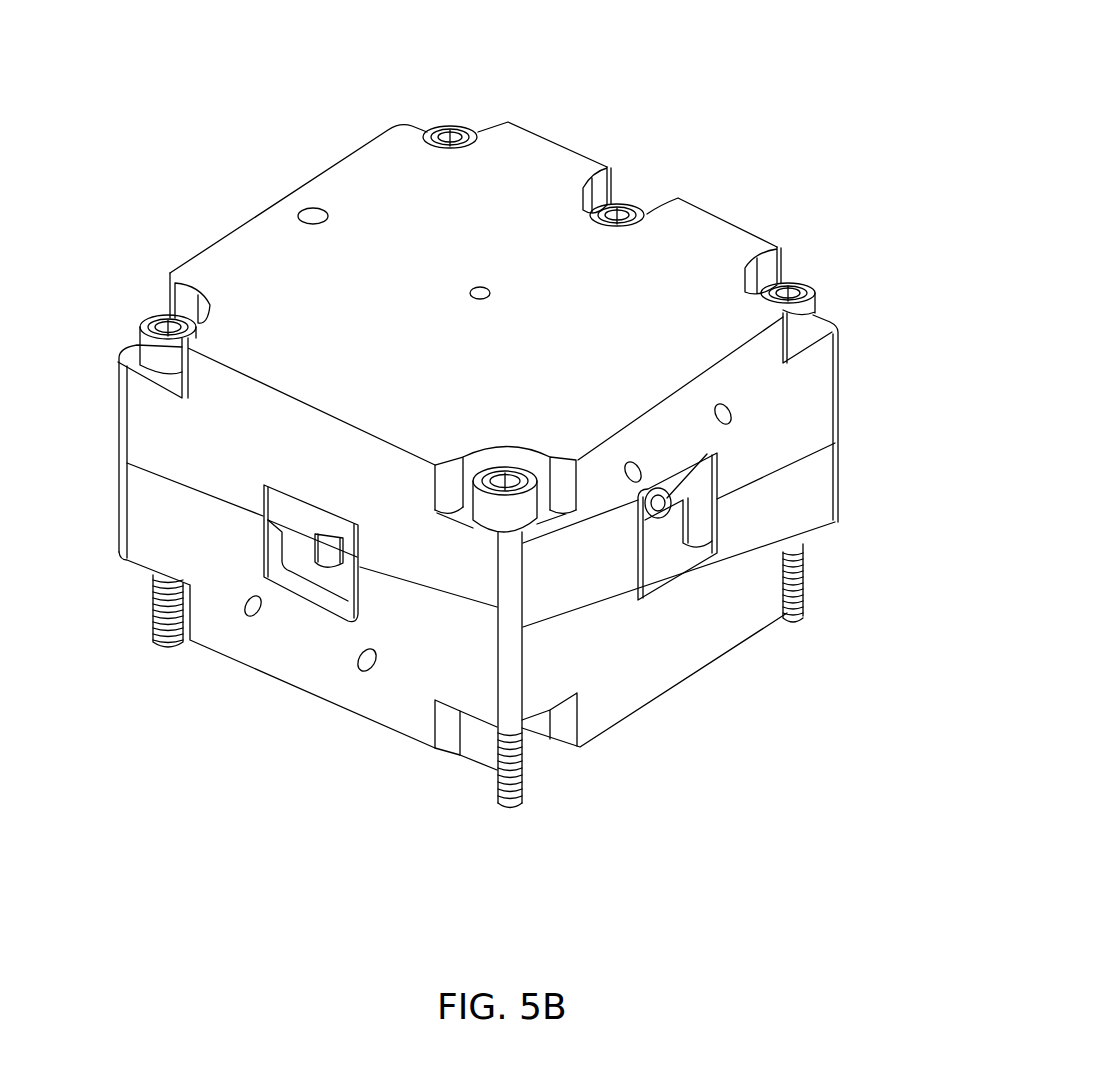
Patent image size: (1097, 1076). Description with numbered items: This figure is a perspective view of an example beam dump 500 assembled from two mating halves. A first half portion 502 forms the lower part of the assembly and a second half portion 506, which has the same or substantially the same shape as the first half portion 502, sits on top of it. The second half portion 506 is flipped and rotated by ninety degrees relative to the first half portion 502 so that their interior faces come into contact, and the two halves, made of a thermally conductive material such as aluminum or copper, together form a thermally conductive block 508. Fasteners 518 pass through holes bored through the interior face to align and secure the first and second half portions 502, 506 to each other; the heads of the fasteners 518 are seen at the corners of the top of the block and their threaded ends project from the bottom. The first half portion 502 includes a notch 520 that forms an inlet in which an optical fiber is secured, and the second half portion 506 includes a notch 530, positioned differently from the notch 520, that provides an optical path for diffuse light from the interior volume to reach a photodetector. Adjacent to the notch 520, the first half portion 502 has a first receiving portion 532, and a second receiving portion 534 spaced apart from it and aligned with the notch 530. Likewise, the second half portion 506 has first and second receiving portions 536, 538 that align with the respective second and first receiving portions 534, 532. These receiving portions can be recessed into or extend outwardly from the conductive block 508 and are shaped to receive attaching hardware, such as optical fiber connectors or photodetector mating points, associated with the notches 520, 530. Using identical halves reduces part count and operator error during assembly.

The beam dump 500 is at (812, 112).
The first half portion 502 is at (642, 648).
The second half portion 506 is at (788, 387).
The thermally conductive block 508 is at (807, 488).
The fasteners 518 is at (457, 127).
The notch 520 is at (337, 540).
The notch 530 is at (670, 500).
The first receiving portion 532 is at (302, 570).
The second receiving portion 534 is at (667, 543).
The first receiving portion 536 is at (683, 483).
The second receiving portion 538 is at (317, 520).